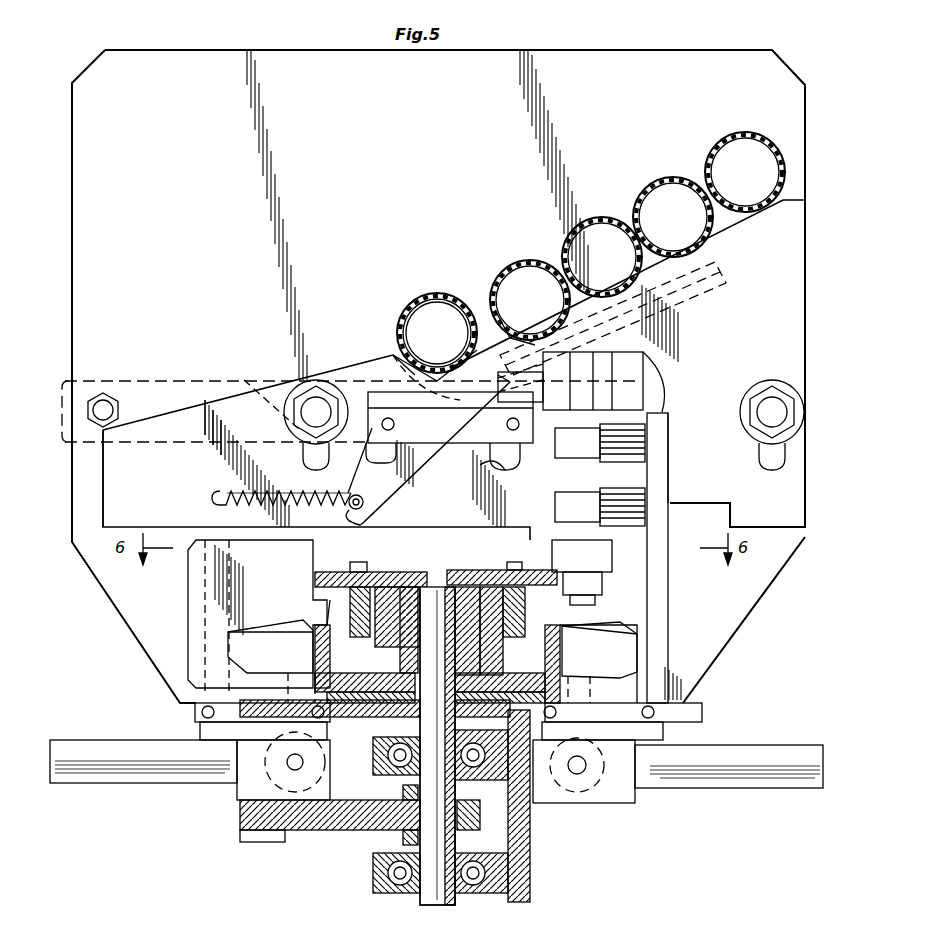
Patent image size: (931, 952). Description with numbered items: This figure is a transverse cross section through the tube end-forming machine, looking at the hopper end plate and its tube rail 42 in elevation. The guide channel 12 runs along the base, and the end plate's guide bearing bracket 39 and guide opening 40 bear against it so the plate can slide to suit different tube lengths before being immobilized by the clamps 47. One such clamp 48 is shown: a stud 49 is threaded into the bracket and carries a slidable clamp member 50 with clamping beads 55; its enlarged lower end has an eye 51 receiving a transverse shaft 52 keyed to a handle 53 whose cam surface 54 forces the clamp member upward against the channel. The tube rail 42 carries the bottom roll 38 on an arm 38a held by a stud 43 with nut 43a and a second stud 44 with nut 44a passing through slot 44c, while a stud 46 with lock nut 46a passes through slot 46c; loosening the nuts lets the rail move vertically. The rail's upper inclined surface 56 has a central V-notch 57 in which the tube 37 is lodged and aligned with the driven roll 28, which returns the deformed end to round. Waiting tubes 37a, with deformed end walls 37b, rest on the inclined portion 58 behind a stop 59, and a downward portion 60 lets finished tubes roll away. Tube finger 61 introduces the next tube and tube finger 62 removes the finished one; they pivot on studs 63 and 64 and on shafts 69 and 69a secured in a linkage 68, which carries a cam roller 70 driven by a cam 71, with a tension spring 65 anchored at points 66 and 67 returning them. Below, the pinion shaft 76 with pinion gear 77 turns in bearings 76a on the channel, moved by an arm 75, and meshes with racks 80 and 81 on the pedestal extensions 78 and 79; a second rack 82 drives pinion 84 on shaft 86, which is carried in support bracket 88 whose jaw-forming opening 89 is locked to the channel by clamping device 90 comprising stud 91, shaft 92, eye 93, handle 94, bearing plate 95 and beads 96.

The guide channel 12 is at (352, 692).
The tube forming roll 28 is at (441, 303).
The tube 37 is at (418, 296).
The unformed tube 37a is at (539, 261).
The deformed end side wall 37b is at (594, 222).
The outer roll 38 is at (392, 352).
The arm 38a is at (244, 380).
The guide bearing bracket 39 is at (197, 616).
The guide opening 40 is at (650, 638).
The tube rail 42 is at (193, 418).
The stud 43 is at (106, 405).
The nut 43a is at (94, 398).
The second stud 44 is at (316, 397).
The nut 44a is at (295, 419).
The slot 44c is at (302, 457).
The stud 46 is at (772, 405).
The lock nut 46a is at (756, 405).
The slot 46c is at (760, 456).
The clamp 47 is at (231, 800).
The clamp 48 is at (245, 805).
The stud 49 is at (295, 683).
The clamp member 50 is at (233, 713).
The eye 51 is at (290, 833).
The transverse shaft 52 is at (304, 764).
The handle 53 is at (98, 750).
The cam surface 54 is at (320, 756).
The beads 55 is at (203, 711).
The inclined surface 56 is at (219, 394).
The V-notch 57 is at (436, 378).
The inclined portion 58 is at (728, 222).
The stop 59 is at (494, 300).
The inclined portion 60 is at (168, 413).
The tube finger 61 is at (656, 376).
The tube finger 62 is at (430, 472).
The stud 63 is at (504, 464).
The stud 64 is at (352, 470).
The tension spring 65 is at (246, 490).
The spring connection on finger 66 is at (360, 505).
The spring connection on tube rail 67 is at (212, 501).
The linkage 68 is at (384, 370).
The shaft 69 is at (395, 424).
The shaft 69a is at (490, 447).
The cam roller 70 is at (540, 392).
The cam 71 is at (640, 393).
The arm 75 is at (346, 815).
The pinion shaft 76 is at (437, 906).
The bearings 76a is at (395, 778).
The pinion gear 77 is at (478, 636).
The offset extension 78 is at (326, 572).
The offset extension 79 is at (514, 638).
The rack 80 is at (360, 640).
The rack 81 is at (508, 650).
The second rack 82 is at (507, 564).
The pinion 84 is at (612, 558).
The shaft 86 is at (588, 607).
The support bracket 88 is at (628, 592).
The jaw-forming opening 89 is at (623, 656).
The clamping device 90 is at (628, 803).
The stud 91 is at (582, 688).
The shaft 92 is at (577, 773).
The eye 93 is at (588, 775).
The handle 94 is at (733, 780).
The bearing plate 95 is at (700, 713).
The beads 96 is at (646, 706).